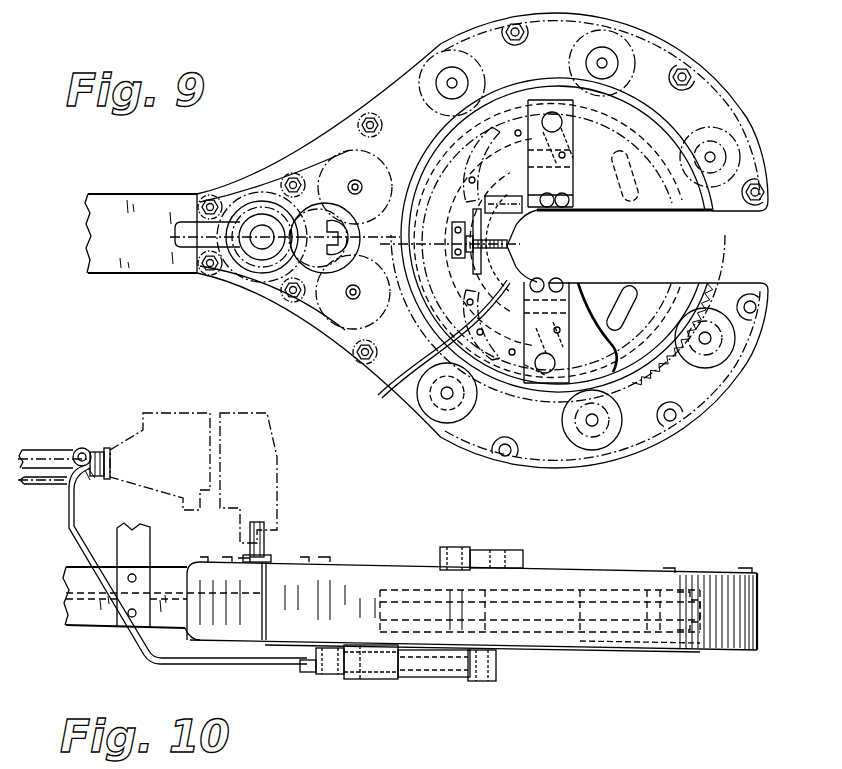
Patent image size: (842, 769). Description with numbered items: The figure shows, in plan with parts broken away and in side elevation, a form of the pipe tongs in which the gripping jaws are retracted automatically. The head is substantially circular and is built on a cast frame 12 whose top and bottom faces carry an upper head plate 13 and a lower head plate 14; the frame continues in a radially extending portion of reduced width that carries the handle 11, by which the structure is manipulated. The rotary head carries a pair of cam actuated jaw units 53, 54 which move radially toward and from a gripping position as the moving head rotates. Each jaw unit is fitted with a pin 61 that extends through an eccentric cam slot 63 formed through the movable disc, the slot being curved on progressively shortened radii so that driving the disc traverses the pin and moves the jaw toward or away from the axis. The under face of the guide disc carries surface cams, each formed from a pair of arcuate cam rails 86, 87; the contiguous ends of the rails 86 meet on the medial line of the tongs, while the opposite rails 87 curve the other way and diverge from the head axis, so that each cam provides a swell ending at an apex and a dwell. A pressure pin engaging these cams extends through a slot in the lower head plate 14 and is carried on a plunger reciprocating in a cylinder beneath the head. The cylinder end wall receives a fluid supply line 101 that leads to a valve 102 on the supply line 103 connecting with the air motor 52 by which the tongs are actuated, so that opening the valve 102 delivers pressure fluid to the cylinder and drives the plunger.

In FIG. 10, the handle 11 is at (533, 652).
In FIG. 10, the cast frame 12 is at (397, 650).
In FIG. 10, the upper head plate 13 is at (592, 572).
In FIG. 9, the lower head plate 14 is at (308, 240).
In FIG. 10, the lower head plate 14 is at (600, 654).
In FIG. 10, the air motor 52 is at (175, 440).
In FIG. 9, the cam actuated jaw unit 53 is at (500, 190).
In FIG. 9, the cam actuated jaw unit 54 is at (560, 392).
In FIG. 9, the pin 61 is at (545, 372).
In FIG. 9, the eccentric cam slot 63 is at (627, 316).
In FIG. 9, the arcuate cam rail 86 is at (478, 212).
In FIG. 9, the arcuate cam rail 87 is at (585, 167).
In FIG. 10, the fluid supply line 101 is at (277, 667).
In FIG. 10, the valve 102 is at (84, 476).
In FIG. 10, the supply line 103 is at (54, 458).